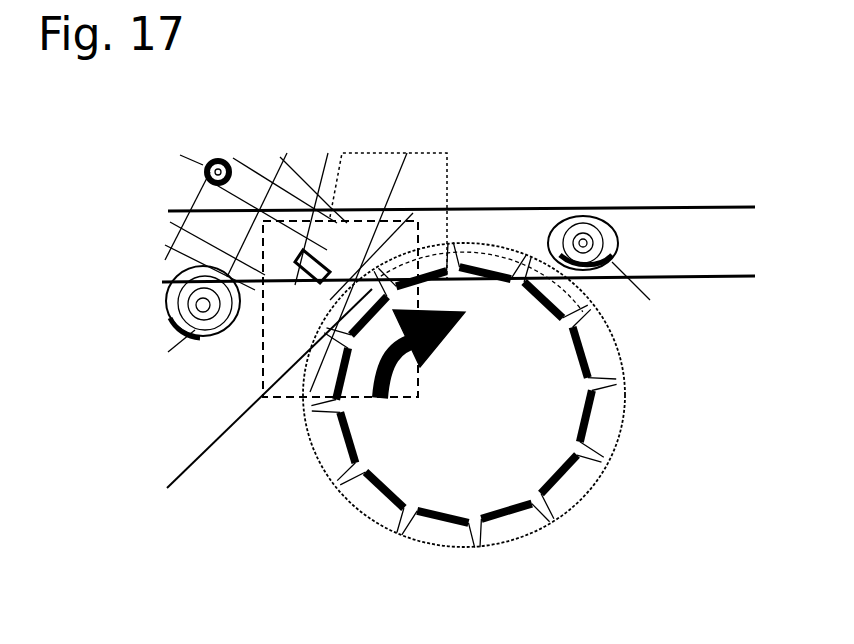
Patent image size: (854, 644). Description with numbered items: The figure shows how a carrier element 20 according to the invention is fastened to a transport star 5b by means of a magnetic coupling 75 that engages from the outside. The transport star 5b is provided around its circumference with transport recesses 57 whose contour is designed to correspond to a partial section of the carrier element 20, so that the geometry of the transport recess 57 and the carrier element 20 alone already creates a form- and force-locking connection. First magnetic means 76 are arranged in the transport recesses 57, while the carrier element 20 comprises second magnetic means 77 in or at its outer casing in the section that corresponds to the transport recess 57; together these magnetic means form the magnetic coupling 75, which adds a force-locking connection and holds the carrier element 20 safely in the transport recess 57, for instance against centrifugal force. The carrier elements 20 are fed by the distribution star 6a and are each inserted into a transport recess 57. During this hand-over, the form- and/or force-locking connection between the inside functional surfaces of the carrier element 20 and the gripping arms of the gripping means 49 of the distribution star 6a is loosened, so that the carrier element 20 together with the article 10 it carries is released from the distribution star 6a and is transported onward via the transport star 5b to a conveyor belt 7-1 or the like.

The gripping means 49 is at (240, 190).
The distribution star 6a is at (142, 209).
The transport star 5b is at (497, 416).
The transport recess 57 is at (435, 533).
The magnetic coupling 75 is at (505, 206).
The first magnetic means 76 is at (496, 272).
The second magnetic means 77 is at (587, 247).
The conveyor belt 7-1 is at (662, 236).
The carrier element 20 is at (681, 314).
The article 10 is at (618, 266).